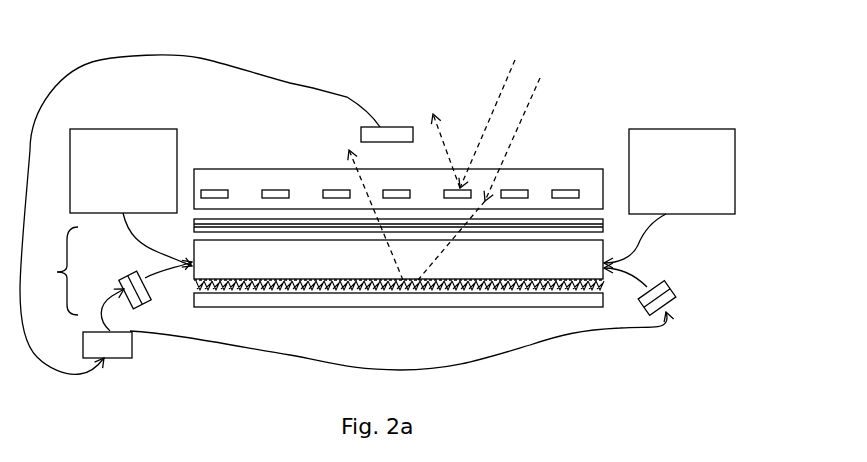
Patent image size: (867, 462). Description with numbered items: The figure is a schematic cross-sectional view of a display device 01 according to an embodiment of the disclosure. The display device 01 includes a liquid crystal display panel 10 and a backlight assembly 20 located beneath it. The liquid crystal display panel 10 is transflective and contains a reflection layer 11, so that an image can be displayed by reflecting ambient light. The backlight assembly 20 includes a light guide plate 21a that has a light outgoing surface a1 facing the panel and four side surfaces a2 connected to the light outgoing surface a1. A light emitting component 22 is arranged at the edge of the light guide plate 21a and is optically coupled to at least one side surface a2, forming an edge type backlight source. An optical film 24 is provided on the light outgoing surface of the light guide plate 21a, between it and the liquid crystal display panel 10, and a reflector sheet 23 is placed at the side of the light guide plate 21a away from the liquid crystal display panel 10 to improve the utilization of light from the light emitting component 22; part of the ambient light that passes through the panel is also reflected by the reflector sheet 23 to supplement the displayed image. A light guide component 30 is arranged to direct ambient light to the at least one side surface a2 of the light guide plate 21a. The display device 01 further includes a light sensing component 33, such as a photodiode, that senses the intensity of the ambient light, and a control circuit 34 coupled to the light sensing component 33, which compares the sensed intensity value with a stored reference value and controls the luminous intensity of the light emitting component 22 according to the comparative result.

The display device 01 is at (87, 25).
The liquid crystal display panel 10 is at (543, 188).
The reflection layer 11 is at (266, 193).
The backlight assembly 20 is at (319, 289).
The light guide plate 21a is at (217, 253).
The light emitting component 22 is at (123, 285).
The reflector sheet 23 is at (418, 305).
The optical film 24 is at (195, 220).
The light guide component 30 is at (120, 173).
The light sensing component 33 is at (400, 132).
The control circuit 34 is at (125, 350).
The light outgoing surface a1 is at (590, 241).
The side surfaces a2 is at (191, 272).